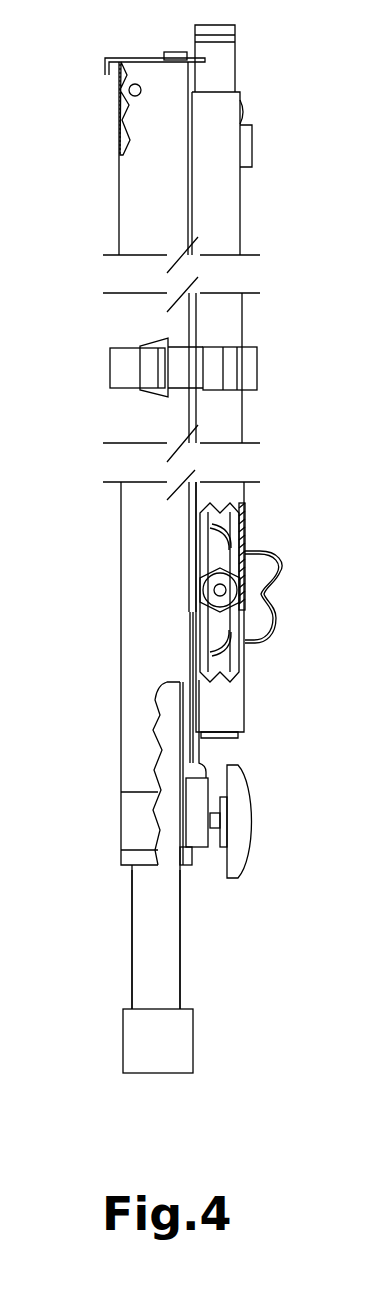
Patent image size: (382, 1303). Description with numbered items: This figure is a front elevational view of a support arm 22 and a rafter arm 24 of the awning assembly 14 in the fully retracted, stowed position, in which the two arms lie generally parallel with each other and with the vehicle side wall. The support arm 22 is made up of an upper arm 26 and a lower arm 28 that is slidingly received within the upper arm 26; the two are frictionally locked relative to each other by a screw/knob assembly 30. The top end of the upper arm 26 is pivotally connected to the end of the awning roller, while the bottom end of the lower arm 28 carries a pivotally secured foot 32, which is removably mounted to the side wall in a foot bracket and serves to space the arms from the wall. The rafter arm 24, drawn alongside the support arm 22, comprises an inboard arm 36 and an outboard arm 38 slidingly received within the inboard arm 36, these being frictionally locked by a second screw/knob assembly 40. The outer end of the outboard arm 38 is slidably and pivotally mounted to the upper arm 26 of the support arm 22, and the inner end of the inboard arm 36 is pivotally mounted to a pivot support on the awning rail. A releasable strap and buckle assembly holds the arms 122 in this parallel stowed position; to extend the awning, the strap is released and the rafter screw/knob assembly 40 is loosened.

The awning assembly 14 is at (102, 202).
The support arm 22 is at (130, 915).
The rafter arm 24 is at (242, 240).
The upper arm 26 is at (122, 743).
The lower arm 28 is at (132, 967).
The screw/knob assembly 30 is at (253, 818).
The foot 32 is at (193, 1043).
The inboard arm 36 is at (245, 538).
The outboard arm 38 is at (245, 712).
The screw/knob assembly 40 is at (265, 598).
The arms held by strap and buckle assembly 122 is at (243, 347).